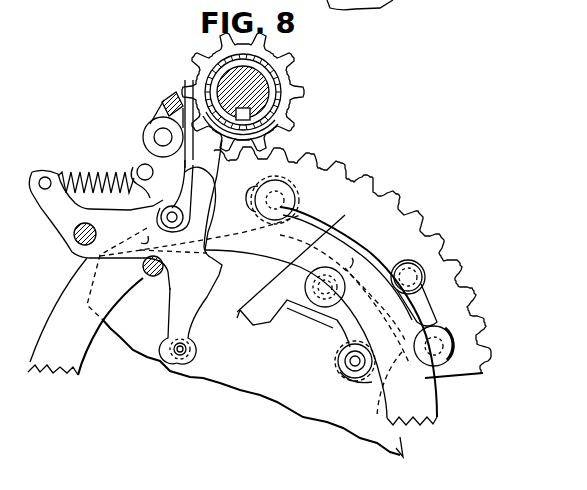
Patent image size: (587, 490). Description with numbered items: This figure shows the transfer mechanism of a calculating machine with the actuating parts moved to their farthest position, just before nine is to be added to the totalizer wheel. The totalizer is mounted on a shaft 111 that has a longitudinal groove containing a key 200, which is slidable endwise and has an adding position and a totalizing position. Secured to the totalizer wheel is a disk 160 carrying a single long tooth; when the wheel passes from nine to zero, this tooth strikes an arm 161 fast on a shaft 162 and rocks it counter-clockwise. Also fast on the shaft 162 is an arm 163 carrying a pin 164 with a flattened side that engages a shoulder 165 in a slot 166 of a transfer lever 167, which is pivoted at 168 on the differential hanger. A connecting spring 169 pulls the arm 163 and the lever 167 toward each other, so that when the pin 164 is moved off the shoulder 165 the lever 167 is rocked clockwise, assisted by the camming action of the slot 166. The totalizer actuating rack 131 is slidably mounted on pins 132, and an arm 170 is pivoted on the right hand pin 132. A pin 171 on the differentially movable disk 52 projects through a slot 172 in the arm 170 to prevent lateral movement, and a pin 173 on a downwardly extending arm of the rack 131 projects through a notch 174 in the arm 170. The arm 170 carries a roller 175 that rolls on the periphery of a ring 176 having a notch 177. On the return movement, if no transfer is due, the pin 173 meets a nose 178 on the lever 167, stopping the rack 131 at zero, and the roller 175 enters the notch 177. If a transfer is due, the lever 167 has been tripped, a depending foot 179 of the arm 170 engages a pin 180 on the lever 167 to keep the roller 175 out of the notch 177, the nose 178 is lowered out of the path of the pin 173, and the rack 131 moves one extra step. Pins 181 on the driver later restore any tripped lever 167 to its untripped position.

The differentially movable disk 52 is at (403, 452).
The shaft 111 is at (262, 88).
The totalizer actuating rack 131 is at (402, 212).
The pin 132 is at (290, 200).
The disk 160 is at (290, 102).
The arm 161 is at (160, 120).
The shaft 162 is at (154, 137).
The arm 163 is at (137, 164).
The pin 164 is at (161, 217).
The shoulder 165 is at (162, 206).
The slot 166 is at (214, 163).
The transfer lever 167 is at (68, 248).
The pivot 168 is at (74, 235).
The connecting spring 169 is at (90, 174).
The arm 170 is at (345, 333).
The pin 171 is at (318, 300).
The slot 172 is at (353, 270).
The pin 173 is at (345, 363).
The notch 174 is at (370, 380).
The roller 175 is at (418, 262).
The ring 176 is at (440, 415).
The notch 177 is at (140, 243).
The nose 178 is at (222, 268).
The depending foot 179 is at (252, 326).
The pin 180 is at (187, 358).
The pin 181 is at (148, 276).
The key 200 is at (280, 125).